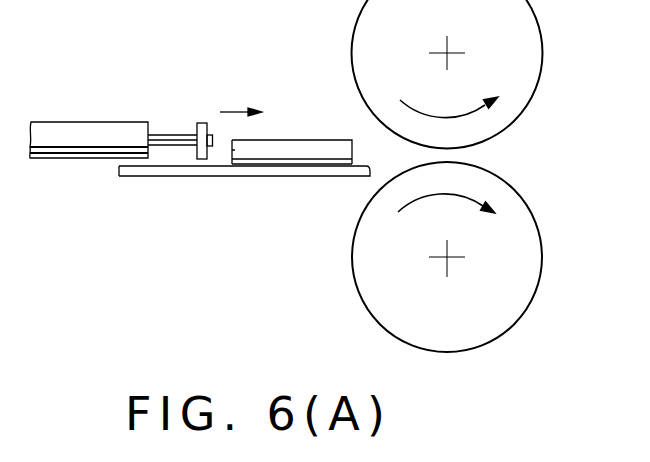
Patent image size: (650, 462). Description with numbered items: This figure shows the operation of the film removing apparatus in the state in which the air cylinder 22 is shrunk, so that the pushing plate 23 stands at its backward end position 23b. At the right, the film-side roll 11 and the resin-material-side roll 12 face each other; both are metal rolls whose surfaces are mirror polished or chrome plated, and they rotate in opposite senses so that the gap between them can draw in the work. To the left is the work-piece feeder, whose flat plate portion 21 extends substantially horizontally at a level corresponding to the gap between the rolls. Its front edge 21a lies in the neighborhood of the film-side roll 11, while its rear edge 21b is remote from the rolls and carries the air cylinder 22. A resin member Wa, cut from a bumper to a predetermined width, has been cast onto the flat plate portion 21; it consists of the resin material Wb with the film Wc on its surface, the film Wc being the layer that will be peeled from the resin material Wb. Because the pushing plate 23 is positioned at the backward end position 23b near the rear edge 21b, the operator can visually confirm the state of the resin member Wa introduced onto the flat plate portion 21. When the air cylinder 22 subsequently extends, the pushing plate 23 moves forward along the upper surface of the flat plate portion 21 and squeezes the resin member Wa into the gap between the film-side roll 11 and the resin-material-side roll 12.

The film-side roll 11 is at (525, 262).
The resin-material-side roll 12 is at (525, 55).
The flat plate portion 21 is at (177, 172).
The front edge 21a is at (373, 173).
The rear edge 21b is at (118, 173).
The air cylinder 22 is at (67, 130).
The pushing plate 23 is at (197, 130).
The backward end position 23b is at (203, 123).
The resin member Wa is at (308, 140).
The resin material Wb is at (268, 148).
The film Wc is at (263, 163).